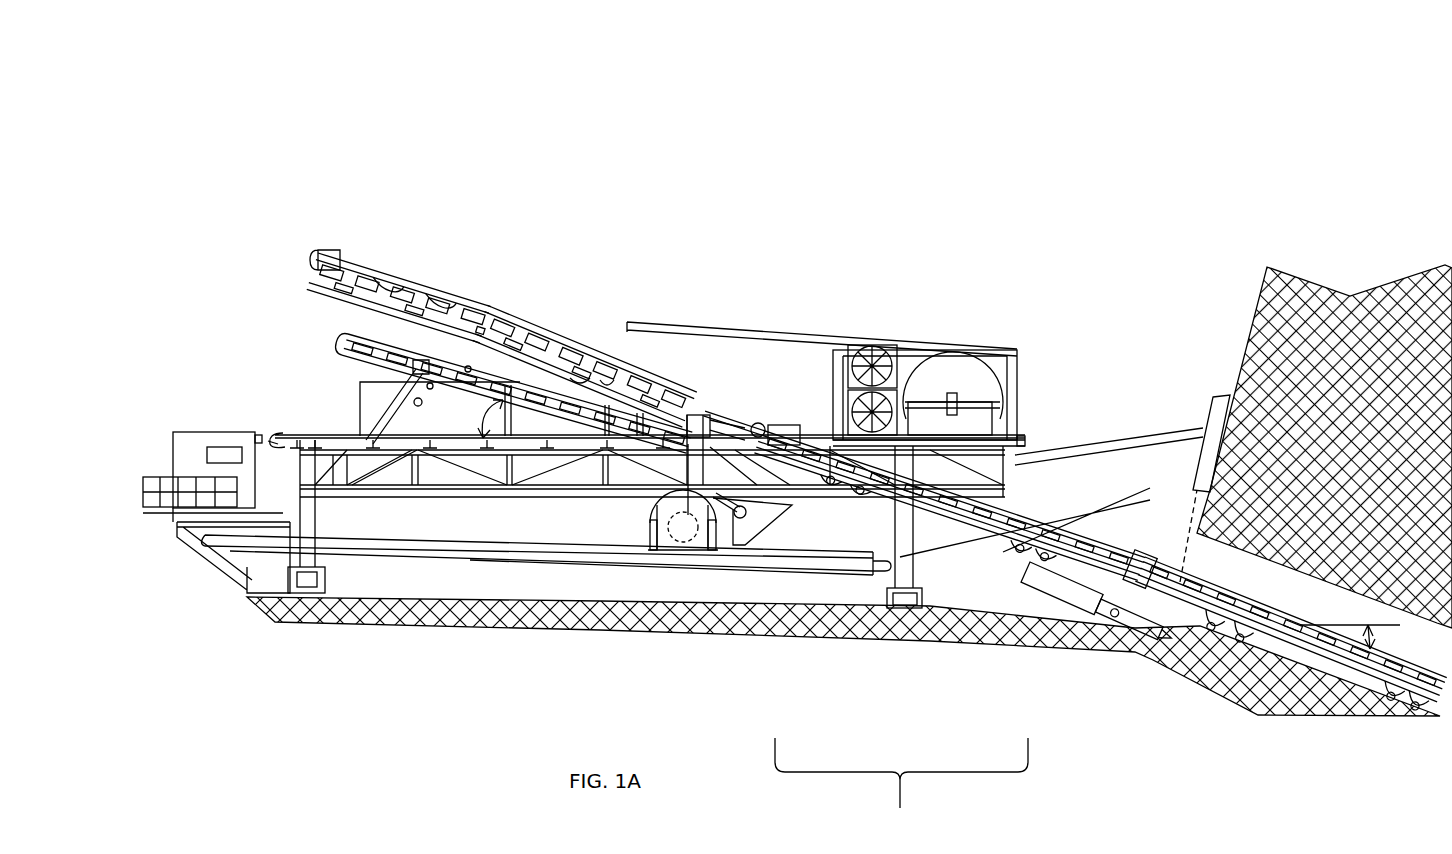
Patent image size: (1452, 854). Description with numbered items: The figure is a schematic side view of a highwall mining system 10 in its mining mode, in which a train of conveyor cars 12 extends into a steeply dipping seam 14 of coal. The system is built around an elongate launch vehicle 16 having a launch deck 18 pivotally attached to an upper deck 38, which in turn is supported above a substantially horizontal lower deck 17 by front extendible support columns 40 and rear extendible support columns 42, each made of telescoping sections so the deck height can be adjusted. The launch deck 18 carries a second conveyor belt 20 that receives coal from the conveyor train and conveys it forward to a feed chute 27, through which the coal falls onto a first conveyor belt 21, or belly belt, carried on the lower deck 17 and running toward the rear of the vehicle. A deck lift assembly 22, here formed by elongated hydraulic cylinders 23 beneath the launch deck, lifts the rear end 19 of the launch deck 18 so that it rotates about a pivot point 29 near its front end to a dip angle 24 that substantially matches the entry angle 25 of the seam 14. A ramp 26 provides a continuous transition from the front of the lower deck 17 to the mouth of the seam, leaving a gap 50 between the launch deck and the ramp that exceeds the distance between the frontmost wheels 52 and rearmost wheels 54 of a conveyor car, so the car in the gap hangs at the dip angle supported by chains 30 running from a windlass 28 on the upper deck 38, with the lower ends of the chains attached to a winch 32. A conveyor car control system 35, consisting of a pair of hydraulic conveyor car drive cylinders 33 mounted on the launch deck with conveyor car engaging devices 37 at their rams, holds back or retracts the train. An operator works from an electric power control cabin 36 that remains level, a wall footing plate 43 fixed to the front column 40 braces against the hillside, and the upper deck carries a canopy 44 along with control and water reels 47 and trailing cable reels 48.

The highwall mining system 10 is at (775, 145).
The conveyor car 12 is at (644, 330).
The seam 14 is at (1283, 634).
The launch vehicle 16 is at (603, 193).
The lower deck 17 is at (438, 540).
The launch deck 18 is at (446, 288).
The rear end of launch deck 19 is at (340, 252).
The second conveyor belt 20 is at (403, 347).
The first conveyor belt 21 is at (817, 570).
The deck lift assembly 22 is at (418, 402).
The hydraulic cylinder 23 is at (430, 386).
The dip angle 24 is at (468, 369).
The entry angle 25 is at (1372, 630).
The ramp 26 is at (1107, 600).
The feed chute 27 is at (768, 533).
The windlass 28 is at (697, 420).
The pivot point 29 is at (727, 432).
The chains 30 is at (735, 443).
The winch 32 is at (687, 543).
The conveyor car drive cylinder 33 is at (570, 378).
The conveyor car control system 35 is at (607, 378).
The electric power control cabin 36 is at (192, 432).
The conveyor car engaging device 37 is at (480, 390).
The upper deck 38 is at (307, 443).
The front extendible support column 40 is at (915, 473).
The rear extendible support column 42 is at (270, 440).
The wall footing plate 43 is at (1216, 397).
The canopy 44 is at (703, 330).
The control and water reels 47 is at (360, 382).
The trailing cable reels 48 is at (975, 365).
The gap 50 is at (901, 788).
The frontmost wheels 52 is at (1007, 547).
The rearmost wheels 54 is at (862, 493).